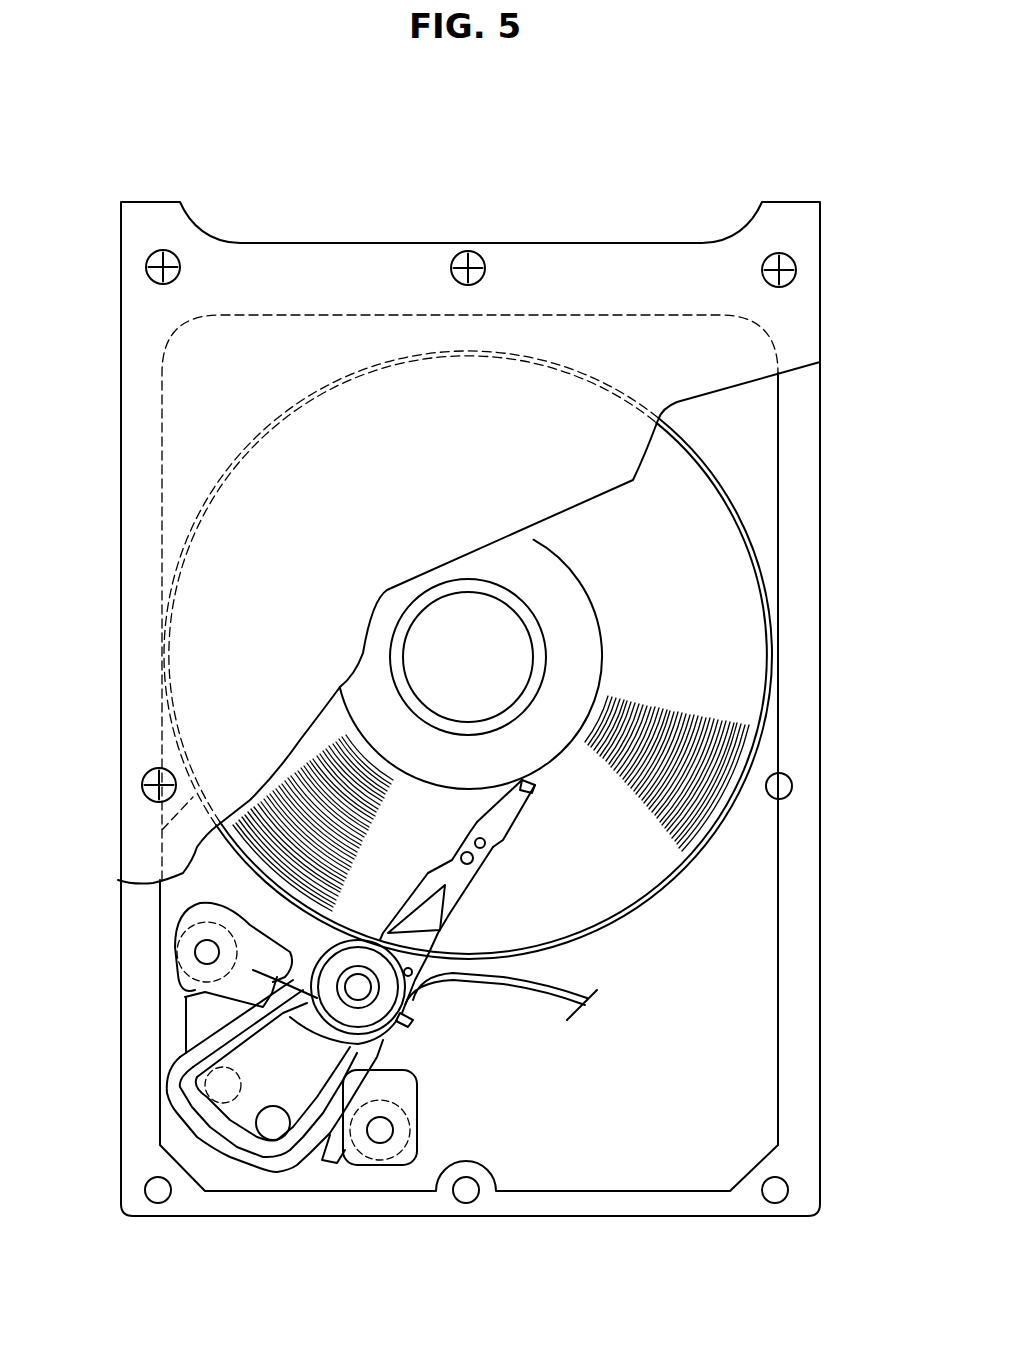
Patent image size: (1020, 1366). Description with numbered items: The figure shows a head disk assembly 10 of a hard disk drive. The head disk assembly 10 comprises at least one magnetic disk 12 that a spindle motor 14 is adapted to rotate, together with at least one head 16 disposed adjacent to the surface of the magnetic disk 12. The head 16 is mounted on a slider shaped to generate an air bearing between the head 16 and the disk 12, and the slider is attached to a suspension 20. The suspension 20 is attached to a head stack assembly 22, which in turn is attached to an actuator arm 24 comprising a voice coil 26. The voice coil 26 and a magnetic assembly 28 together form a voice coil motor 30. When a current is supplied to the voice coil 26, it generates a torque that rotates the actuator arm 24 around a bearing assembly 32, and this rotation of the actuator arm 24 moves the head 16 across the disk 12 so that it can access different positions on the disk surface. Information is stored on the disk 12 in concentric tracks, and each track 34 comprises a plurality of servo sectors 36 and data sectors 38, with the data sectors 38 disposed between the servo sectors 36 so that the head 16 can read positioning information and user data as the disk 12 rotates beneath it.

The head disk assembly 10 is at (535, 184).
The magnetic disk 12 is at (733, 589).
The spindle motor 14 is at (445, 632).
The head 16 is at (535, 788).
The suspension 20 is at (520, 800).
The head stack assembly 22 is at (470, 899).
The actuator arm 24 is at (267, 1007).
The voice coil 26 is at (190, 1072).
The magnetic assembly 28 is at (210, 1018).
The voice coil motor 30 is at (327, 1145).
The bearing assembly 32 is at (372, 1002).
The track 34 is at (323, 777).
The boss 36 is at (413, 1128).
The boss 38 is at (180, 938).